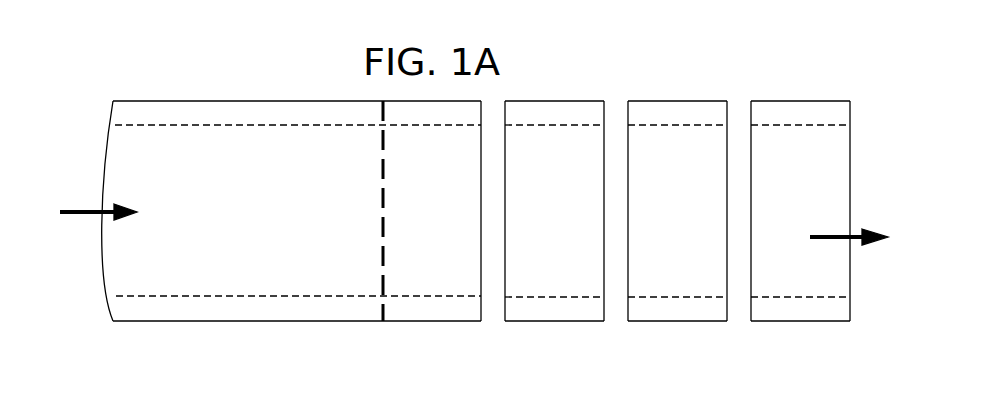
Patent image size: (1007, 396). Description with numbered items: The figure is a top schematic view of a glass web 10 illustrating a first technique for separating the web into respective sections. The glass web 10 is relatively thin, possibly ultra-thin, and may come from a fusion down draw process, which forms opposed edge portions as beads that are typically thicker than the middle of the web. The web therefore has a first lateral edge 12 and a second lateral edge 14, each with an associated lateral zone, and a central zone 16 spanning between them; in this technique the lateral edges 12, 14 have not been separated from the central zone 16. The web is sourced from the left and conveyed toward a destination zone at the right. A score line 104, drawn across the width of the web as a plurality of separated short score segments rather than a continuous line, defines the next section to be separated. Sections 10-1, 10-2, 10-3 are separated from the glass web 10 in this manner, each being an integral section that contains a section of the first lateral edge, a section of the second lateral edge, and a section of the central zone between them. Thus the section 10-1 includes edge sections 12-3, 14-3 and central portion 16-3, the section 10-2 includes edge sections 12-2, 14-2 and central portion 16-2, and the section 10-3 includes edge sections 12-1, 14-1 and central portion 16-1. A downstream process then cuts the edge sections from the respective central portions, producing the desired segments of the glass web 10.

The glass web 10 is at (323, 211).
The score line 104 is at (385, 197).
The second lateral edge 14 is at (137, 101).
The central zone 16 is at (160, 164).
The first lateral edge 12 is at (137, 321).
The section of the glass web 10-1 is at (595, 89).
The section of the glass web 10-2 is at (727, 87).
The section of the glass web 10-3 is at (851, 86).
The second lateral edge section 14-3 is at (511, 113).
The second lateral edge section 14-2 is at (634, 113).
The second lateral edge section 14-1 is at (757, 113).
The central portion section 16-3 is at (554, 211).
The central portion section 16-2 is at (677, 211).
The central portion section 16-1 is at (800, 211).
The first lateral edge section 12-3 is at (591, 308).
The first lateral edge section 12-2 is at (714, 308).
The first lateral edge section 12-1 is at (837, 308).